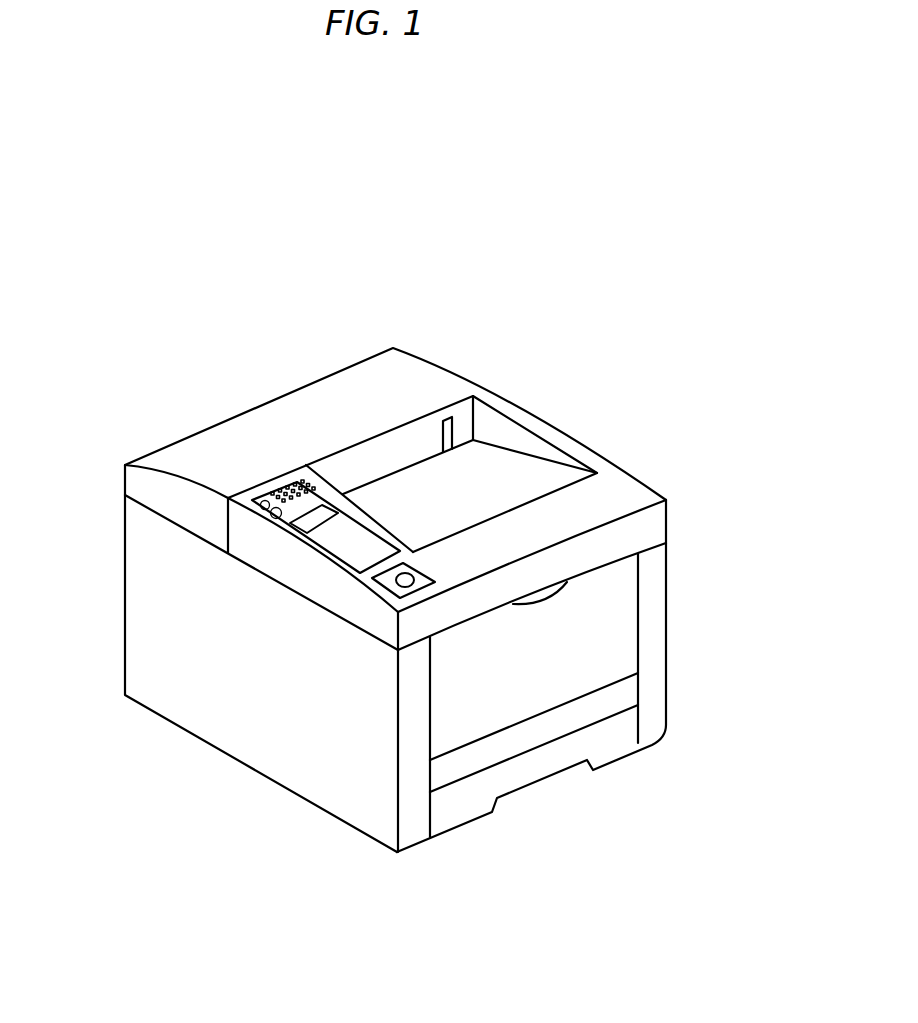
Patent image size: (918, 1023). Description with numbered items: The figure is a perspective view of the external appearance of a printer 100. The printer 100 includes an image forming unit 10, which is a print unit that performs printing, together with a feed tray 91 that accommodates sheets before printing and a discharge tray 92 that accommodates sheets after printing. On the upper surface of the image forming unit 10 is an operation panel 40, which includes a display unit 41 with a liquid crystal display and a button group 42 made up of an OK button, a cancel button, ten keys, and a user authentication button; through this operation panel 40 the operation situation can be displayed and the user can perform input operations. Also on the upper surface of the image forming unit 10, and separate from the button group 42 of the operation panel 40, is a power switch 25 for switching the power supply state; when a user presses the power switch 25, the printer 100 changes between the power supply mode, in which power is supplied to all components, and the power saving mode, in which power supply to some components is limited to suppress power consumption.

The printer 100 is at (507, 339).
The image forming unit 10 is at (147, 597).
The operation panel 40 is at (282, 357).
The display unit 41 is at (328, 514).
The button group 42 is at (259, 498).
The discharge tray 92 is at (502, 467).
The power switch 25 is at (412, 577).
The feed tray 91 is at (620, 741).